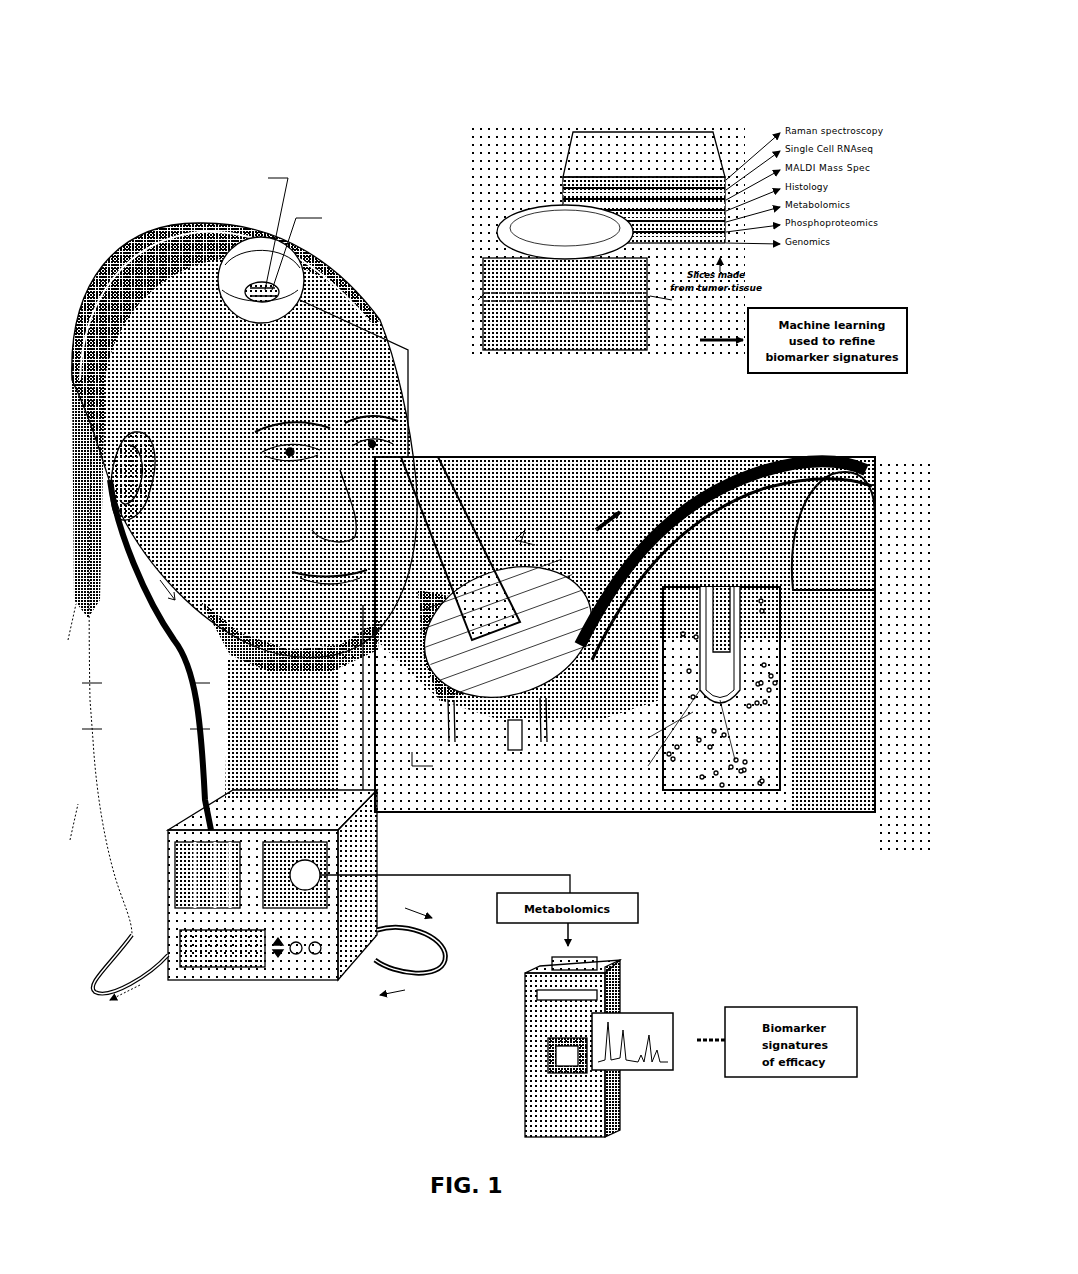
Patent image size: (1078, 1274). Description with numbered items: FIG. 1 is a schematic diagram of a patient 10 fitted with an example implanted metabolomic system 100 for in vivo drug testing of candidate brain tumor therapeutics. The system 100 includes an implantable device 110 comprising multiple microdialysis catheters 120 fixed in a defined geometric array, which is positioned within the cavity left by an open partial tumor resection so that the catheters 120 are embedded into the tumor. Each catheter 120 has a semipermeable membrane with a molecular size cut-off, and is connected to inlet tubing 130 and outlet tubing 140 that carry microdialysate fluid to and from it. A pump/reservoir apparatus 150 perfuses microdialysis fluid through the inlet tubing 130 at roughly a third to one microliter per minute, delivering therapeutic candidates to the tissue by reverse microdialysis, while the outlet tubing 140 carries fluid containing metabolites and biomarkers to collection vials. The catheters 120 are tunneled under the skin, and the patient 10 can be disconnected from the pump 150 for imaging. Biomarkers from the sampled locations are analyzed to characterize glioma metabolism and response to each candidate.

The system 100 is at (230, 72).
The patient 10 is at (377, 319).
The implantable device 110 is at (526, 552).
The microdialysis catheter 120 is at (432, 712).
The inlet tubing 130 is at (410, 482).
The outlet tubing 140 is at (693, 482).
The pump/reservoir apparatus 150 is at (195, 980).